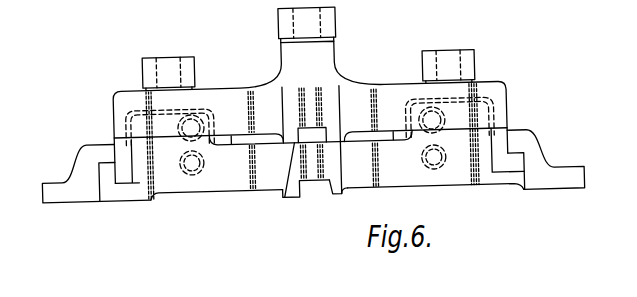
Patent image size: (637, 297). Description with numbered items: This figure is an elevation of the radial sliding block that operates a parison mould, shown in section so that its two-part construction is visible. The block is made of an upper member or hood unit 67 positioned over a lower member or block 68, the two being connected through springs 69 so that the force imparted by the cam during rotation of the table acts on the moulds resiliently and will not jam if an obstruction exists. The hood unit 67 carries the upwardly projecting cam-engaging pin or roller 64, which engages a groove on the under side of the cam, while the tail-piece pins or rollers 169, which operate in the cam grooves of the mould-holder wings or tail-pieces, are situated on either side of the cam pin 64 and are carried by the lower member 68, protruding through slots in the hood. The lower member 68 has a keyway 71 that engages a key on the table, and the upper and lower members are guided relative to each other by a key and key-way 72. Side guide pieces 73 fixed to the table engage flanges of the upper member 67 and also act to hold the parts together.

The cam-engaging pin or roller 64 is at (292, 30).
The tail-piece pin or roller 169 is at (166, 66).
The upper member or hood unit 67 is at (245, 103).
The lower member or block 68 is at (240, 185).
The springs 69 is at (182, 184).
The keyway 71 is at (327, 199).
The key and key-way 72 is at (283, 197).
The side guide pieces 73 is at (85, 159).